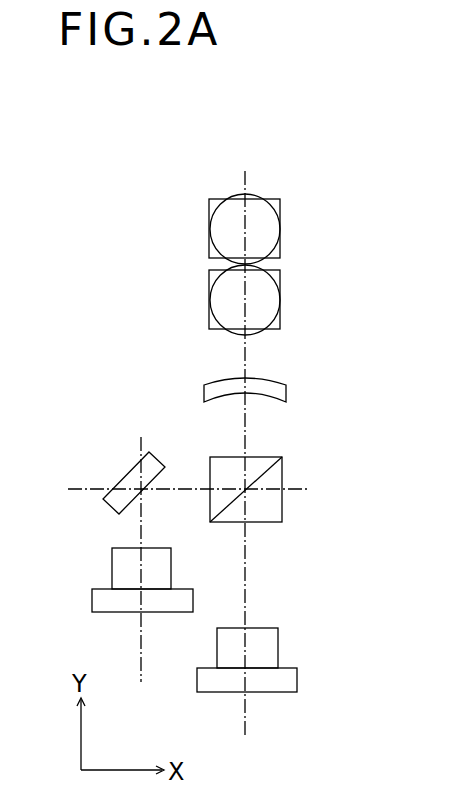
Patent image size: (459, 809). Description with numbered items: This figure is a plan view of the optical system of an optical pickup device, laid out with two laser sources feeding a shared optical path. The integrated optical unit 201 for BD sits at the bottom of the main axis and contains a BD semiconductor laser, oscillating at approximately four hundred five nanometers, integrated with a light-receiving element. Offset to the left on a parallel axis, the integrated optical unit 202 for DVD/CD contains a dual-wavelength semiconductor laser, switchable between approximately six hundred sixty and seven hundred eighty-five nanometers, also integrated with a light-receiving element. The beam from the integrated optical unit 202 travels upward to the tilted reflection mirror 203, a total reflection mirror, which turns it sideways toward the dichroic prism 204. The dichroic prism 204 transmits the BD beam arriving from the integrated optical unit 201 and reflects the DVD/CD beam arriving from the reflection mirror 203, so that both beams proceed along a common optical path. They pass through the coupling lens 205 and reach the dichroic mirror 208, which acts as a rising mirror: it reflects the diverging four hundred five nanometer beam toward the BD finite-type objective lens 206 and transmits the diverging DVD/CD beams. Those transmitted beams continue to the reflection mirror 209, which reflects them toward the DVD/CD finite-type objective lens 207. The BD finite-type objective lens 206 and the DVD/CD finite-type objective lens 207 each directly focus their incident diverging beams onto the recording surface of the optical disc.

The integrated optical unit for BD 201 is at (298, 680).
The integrated optical unit for DVD/CD 202 is at (92, 600).
The reflection mirror 203 is at (126, 475).
The dichroic prism 204 is at (275, 505).
The coupling lens 205 is at (288, 389).
The BD finite-type objective lens 206 is at (233, 303).
The DVD/CD finite-type objective lens 207 is at (231, 231).
The dichroic mirror 208 is at (283, 316).
The reflection mirror 209 is at (283, 209).